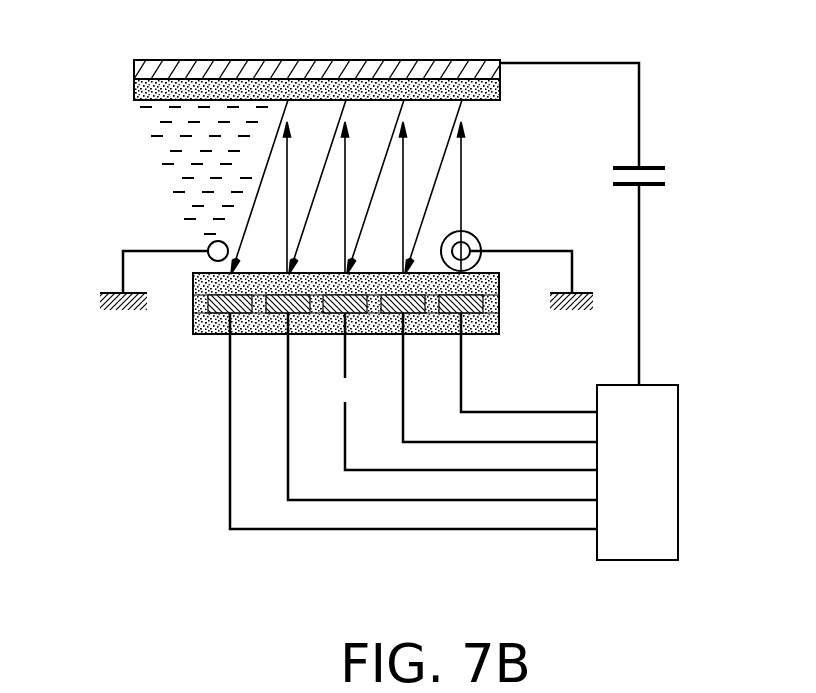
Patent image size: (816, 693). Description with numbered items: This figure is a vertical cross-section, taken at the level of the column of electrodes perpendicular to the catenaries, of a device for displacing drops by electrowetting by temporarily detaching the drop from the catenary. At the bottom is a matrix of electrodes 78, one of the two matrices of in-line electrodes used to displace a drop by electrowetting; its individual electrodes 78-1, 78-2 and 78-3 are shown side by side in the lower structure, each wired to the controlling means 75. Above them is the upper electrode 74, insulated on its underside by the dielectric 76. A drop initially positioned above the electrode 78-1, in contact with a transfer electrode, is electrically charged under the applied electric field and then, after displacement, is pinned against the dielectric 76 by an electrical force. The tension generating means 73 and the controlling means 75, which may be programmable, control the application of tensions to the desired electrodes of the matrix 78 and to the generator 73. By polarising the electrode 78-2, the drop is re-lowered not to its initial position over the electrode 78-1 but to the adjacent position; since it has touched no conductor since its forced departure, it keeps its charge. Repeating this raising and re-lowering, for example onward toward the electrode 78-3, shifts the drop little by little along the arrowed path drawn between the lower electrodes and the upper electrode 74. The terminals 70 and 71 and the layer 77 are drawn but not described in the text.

The upper electrode 74 is at (140, 70).
The dielectric 76 is at (137, 90).
The tension generating means 73 is at (655, 186).
The terminal 70 is at (526, 250).
The grounded terminal 71 is at (122, 252).
The insulating layer 77 is at (193, 287).
The matrix of electrodes 78 is at (195, 335).
The electrode 78-1 is at (500, 315).
The electrode 78-2 is at (428, 333).
The electrode 78-3 is at (370, 335).
The controlling means 75 is at (668, 468).